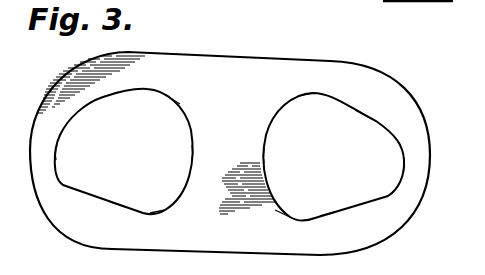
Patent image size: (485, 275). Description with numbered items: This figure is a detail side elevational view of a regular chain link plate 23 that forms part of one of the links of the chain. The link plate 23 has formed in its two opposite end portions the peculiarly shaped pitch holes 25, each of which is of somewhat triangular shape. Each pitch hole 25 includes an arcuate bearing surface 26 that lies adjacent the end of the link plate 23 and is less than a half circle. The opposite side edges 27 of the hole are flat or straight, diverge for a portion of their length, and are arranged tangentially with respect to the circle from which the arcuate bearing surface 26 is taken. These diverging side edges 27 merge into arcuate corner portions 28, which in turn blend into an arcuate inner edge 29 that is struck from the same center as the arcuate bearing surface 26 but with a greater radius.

The link plate 23 is at (421, 118).
The pitch hole 25 is at (133, 161).
The arcuate bearing surface 26 is at (57, 150).
The side edge 27 is at (113, 100).
The arcuate corner portion 28 is at (172, 97).
The arcuate inner edge 29 is at (192, 152).